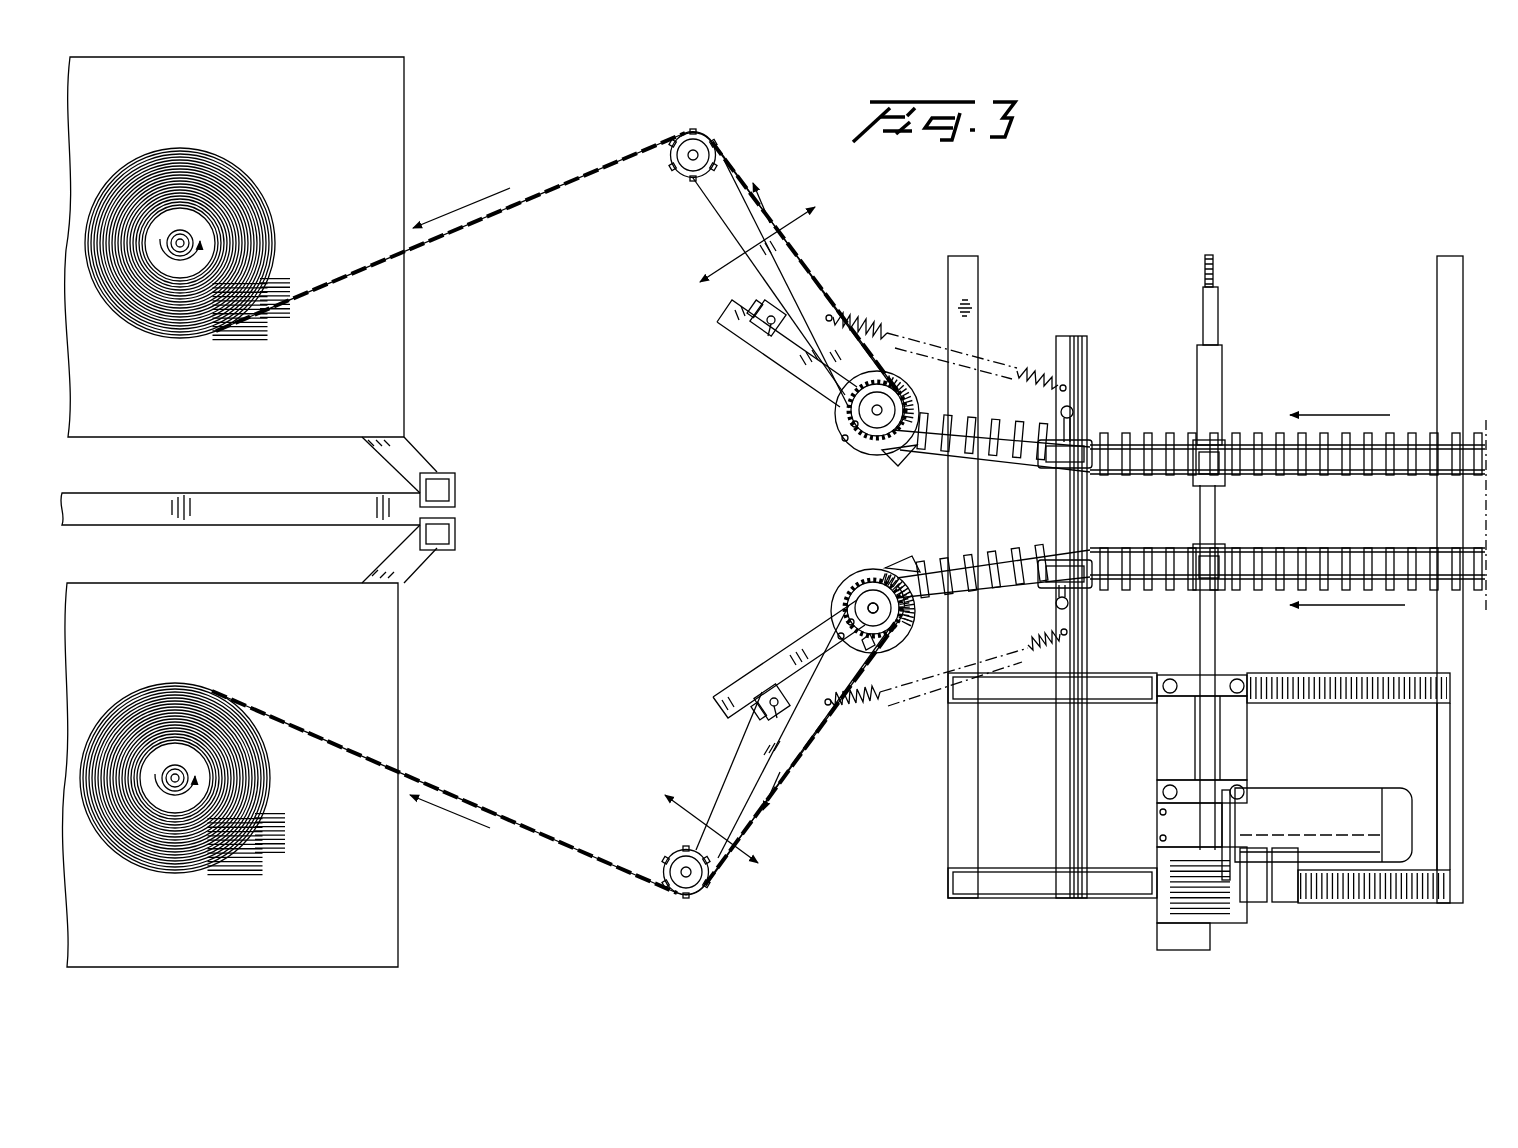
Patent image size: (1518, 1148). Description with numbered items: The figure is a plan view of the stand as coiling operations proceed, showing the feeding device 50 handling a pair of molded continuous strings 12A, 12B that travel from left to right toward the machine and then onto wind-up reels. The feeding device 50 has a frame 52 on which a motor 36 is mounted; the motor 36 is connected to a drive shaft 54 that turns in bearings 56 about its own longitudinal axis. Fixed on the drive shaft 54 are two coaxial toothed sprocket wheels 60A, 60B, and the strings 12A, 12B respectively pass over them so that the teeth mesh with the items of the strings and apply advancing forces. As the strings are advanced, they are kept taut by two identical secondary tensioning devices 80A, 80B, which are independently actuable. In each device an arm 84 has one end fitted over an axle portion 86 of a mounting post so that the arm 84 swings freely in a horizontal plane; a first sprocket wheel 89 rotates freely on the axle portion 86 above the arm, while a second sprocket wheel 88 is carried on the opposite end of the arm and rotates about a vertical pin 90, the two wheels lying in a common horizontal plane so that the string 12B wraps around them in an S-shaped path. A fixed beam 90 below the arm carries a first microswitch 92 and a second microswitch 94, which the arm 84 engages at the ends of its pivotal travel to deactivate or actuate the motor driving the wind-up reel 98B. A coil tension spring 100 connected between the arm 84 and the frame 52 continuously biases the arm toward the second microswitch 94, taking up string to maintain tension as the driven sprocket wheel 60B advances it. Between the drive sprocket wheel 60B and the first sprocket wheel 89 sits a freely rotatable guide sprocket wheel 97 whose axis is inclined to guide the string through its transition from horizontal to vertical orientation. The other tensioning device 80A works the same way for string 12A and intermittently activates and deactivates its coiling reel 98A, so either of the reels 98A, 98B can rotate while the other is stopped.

The continuous string 12A is at (537, 190).
The continuous string 12B is at (478, 797).
The motor 36 is at (1380, 795).
The feeding device 50 is at (1276, 398).
The frame 52 is at (1441, 734).
The drive shaft 54 is at (1212, 758).
The bearings 56 is at (1228, 677).
The toothed sprocket wheel 60A is at (1230, 484).
The toothed sprocket wheel 60B is at (1222, 546).
The secondary tensioning device 80A is at (833, 434).
The secondary tensioning device 80B is at (790, 635).
The arm 84 is at (797, 282).
The axle portion 86 is at (872, 604).
The second sprocket wheel 88 is at (672, 166).
The first sprocket wheel 89 is at (905, 620).
The vertical pin 90 is at (760, 351).
The first microswitch 92 is at (746, 721).
The second microswitch 94 is at (870, 642).
The guide sprocket wheel 97 is at (1074, 432).
The coiling reel 98A is at (223, 681).
The wind-up reel 98B is at (266, 172).
The coil tension spring 100 is at (860, 321).